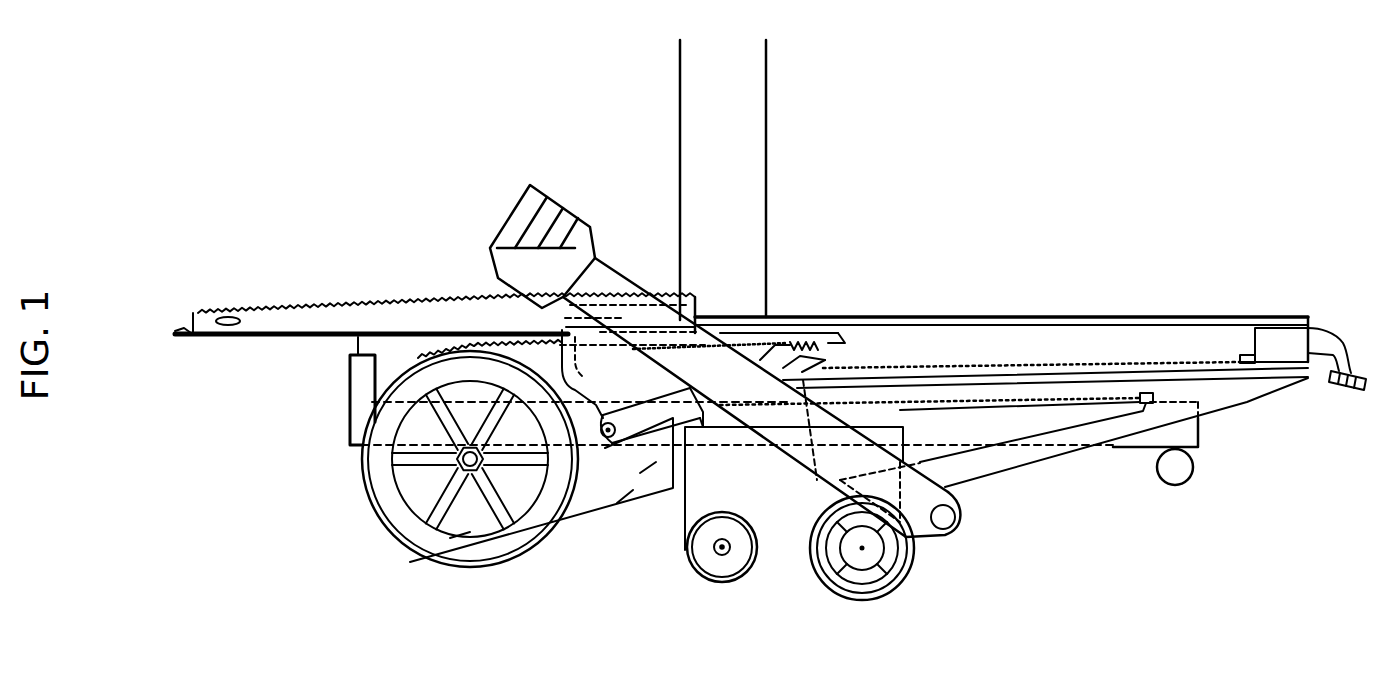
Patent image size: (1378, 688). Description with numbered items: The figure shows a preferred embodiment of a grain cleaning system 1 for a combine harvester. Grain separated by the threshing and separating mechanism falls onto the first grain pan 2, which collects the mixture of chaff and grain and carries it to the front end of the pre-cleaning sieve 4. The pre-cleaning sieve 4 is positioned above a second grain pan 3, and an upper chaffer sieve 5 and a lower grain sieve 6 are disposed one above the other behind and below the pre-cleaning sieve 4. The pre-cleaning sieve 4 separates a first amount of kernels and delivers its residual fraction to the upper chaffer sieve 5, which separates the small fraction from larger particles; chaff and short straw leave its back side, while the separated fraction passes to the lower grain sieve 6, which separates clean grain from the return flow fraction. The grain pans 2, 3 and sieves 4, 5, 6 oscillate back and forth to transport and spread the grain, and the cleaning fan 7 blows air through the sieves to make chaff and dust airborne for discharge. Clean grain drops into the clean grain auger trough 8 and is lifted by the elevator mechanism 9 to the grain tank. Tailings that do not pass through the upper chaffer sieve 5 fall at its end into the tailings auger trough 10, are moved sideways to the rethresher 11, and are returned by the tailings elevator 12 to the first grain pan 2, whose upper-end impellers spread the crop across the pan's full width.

The grain cleaning system 1 is at (249, 191).
The first grain pan 2 is at (332, 312).
The second grain pan 3 is at (579, 437).
The pre-cleaning sieve 4 is at (783, 343).
The upper chaffer sieve 5 is at (946, 363).
The lower grain sieve 6 is at (1097, 405).
The cleaning fan 7 is at (392, 501).
The clean grain auger trough 8 is at (719, 571).
The elevator mechanism 9 is at (769, 100).
The tailings auger trough 10 is at (893, 588).
The rethresher 11 is at (836, 572).
The tailings elevator 12 is at (609, 284).